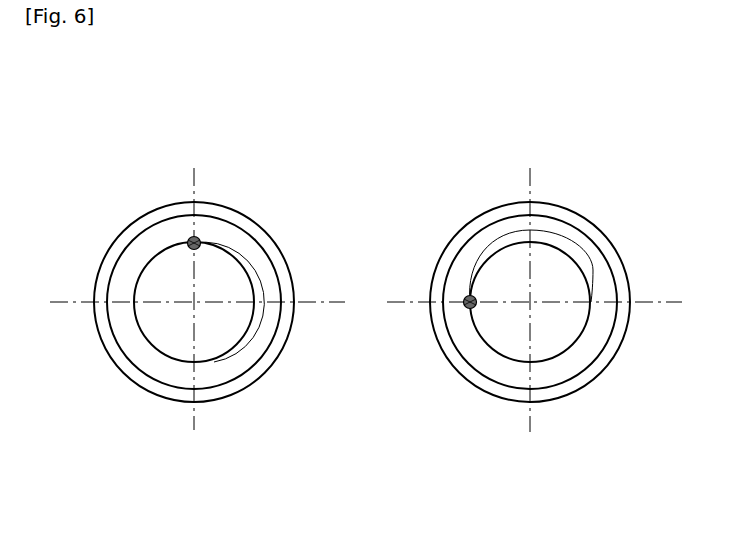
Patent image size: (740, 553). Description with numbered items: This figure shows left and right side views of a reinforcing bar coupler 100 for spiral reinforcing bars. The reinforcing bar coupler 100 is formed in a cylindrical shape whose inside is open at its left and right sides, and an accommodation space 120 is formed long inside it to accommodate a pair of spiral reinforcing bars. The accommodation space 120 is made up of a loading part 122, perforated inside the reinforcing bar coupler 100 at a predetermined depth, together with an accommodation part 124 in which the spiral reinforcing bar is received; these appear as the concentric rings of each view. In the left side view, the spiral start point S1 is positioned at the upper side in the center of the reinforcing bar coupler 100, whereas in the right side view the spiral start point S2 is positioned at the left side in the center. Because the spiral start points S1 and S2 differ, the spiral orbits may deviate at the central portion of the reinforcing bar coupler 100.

The reinforcing bar coupler 100 is at (225, 178).
The accommodation space 120 is at (390, 367).
The loading part 122 is at (260, 345).
The accommodation part 124 is at (213, 343).
The spiral start point S1 is at (189, 239).
The spiral start point S2 is at (465, 297).